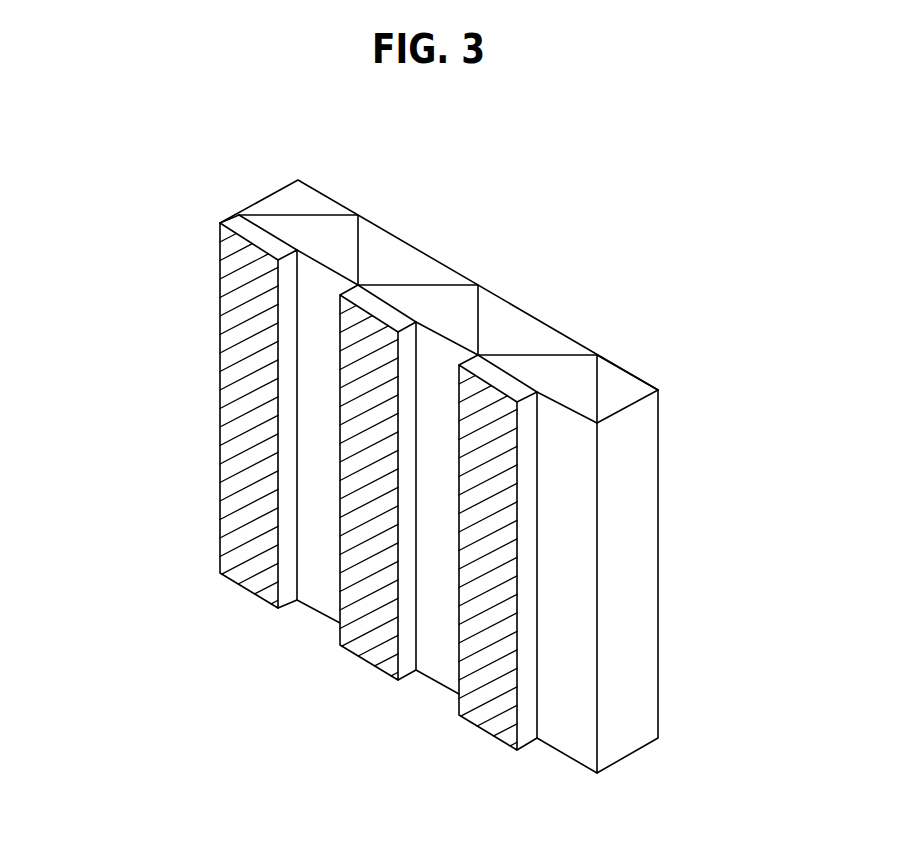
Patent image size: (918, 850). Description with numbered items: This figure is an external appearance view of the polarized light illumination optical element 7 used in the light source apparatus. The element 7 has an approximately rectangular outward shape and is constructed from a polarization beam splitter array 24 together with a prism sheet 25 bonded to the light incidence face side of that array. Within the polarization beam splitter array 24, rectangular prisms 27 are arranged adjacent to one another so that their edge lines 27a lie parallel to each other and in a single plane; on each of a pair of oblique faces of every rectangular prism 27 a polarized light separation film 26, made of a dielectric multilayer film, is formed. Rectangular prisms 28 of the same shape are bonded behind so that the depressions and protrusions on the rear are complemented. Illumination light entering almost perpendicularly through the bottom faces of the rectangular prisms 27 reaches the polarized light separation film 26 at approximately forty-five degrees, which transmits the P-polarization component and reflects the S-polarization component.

The polarized light illumination optical element 7 is at (110, 163).
The polarization beam splitter array 24 is at (277, 192).
The prism sheet 25 is at (218, 290).
The polarized light separation film 26 is at (598, 397).
The rectangular prisms 27 is at (325, 228).
The edge lines 27a is at (597, 355).
The rectangular prisms 28 is at (410, 251).